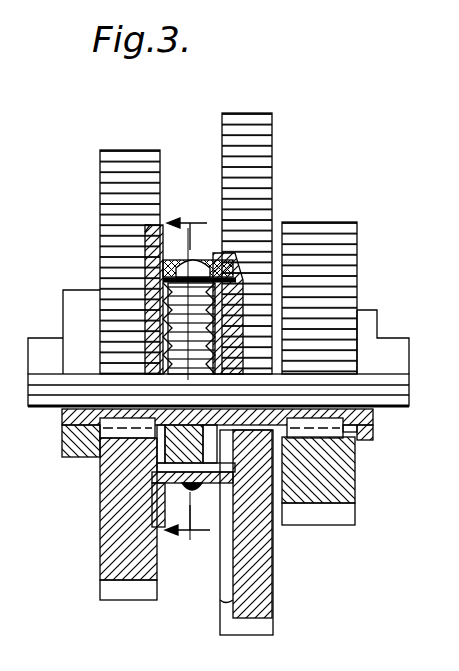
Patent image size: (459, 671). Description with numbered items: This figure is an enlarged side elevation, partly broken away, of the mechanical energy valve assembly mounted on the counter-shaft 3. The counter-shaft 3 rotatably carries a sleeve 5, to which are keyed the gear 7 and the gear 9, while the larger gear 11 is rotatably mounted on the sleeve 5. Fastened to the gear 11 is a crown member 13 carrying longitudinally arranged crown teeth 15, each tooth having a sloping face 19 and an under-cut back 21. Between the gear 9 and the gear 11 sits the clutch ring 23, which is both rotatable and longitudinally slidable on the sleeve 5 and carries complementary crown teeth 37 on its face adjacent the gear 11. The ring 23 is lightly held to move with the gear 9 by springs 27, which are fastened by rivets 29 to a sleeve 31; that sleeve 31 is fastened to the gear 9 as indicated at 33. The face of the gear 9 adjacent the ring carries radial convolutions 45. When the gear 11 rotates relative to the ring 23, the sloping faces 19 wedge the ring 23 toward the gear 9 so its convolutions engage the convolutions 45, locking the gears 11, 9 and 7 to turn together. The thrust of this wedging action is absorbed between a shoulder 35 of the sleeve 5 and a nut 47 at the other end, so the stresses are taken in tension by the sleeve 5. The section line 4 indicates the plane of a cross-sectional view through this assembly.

The counter-shaft 3 is at (397, 352).
The section line 4- 4 is at (187, 383).
The sleeve 5 is at (372, 426).
The gear 7 is at (322, 518).
The gear 9 is at (100, 545).
The gear 11 is at (258, 116).
The crown member 13 is at (245, 306).
The crown teeth 15 is at (262, 343).
The sloping face 19 is at (208, 266).
The under-cut back 21 is at (240, 372).
The clutch ring 23 is at (104, 359).
The springs 27 is at (140, 281).
The rivets 29 is at (191, 482).
The sleeve 31 is at (215, 485).
The fastening 33 is at (150, 503).
The shoulder 35 is at (360, 442).
The teeth 37 is at (186, 374).
The convolutions 45 is at (143, 340).
The nut 47 is at (62, 446).